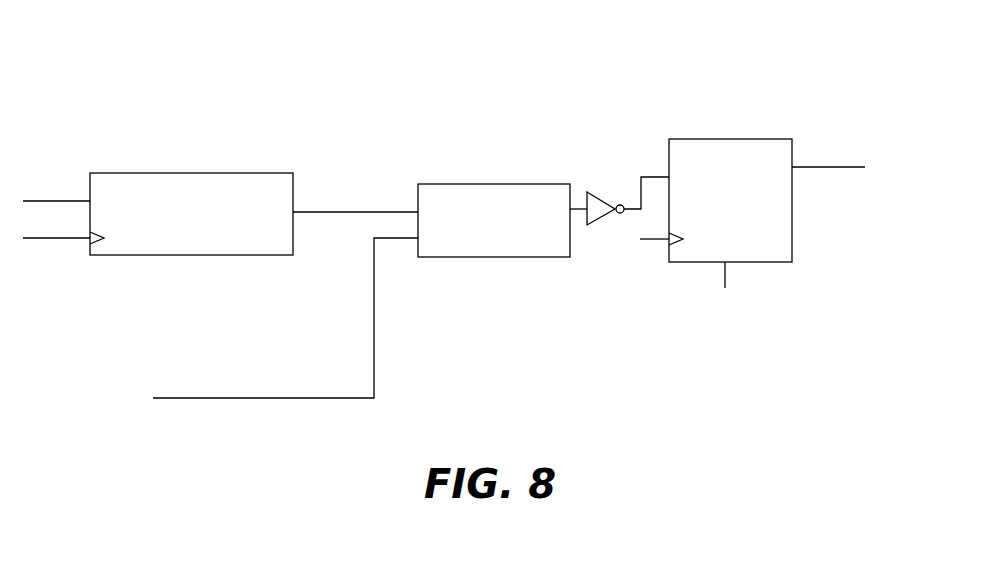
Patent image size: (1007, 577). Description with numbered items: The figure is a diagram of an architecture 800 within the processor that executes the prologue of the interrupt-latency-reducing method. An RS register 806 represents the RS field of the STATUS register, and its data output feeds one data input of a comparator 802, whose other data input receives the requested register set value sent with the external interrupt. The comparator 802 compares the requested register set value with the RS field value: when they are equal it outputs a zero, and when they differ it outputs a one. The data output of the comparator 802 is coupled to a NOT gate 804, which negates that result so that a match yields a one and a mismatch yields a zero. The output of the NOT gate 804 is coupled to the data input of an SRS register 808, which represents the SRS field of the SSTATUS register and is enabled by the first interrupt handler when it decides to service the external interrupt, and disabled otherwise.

The architecture 800 is at (532, 93).
The comparator 802 is at (492, 257).
The NOT gate 804 is at (600, 190).
The RS register 806 is at (190, 255).
The SRS register 808 is at (743, 139).